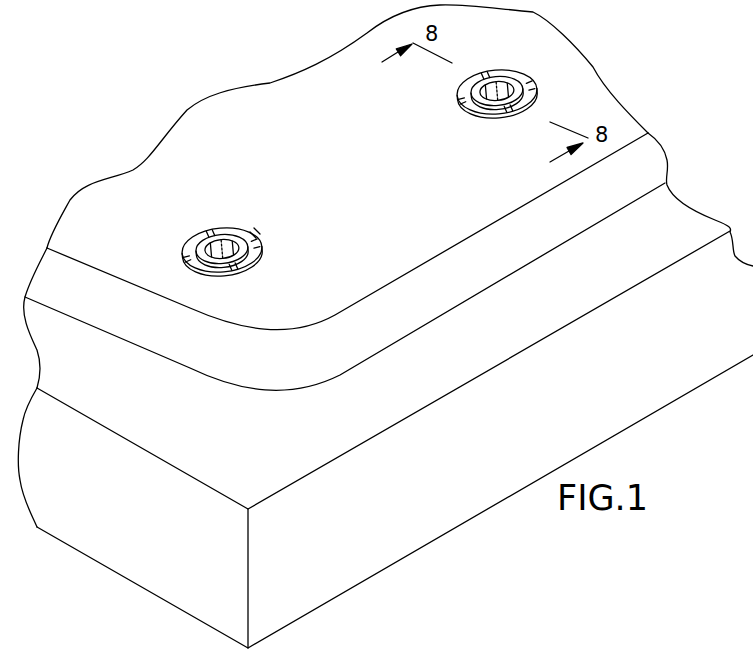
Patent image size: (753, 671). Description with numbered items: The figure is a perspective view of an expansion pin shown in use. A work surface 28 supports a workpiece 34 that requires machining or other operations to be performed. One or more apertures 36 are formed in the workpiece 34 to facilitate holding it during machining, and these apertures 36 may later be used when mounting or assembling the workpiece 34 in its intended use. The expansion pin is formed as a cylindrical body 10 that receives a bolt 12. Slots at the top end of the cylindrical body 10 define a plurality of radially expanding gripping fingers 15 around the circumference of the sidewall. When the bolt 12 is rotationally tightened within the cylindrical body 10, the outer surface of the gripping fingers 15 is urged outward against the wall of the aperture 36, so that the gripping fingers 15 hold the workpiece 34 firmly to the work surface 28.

The cylindrical body 10 is at (339, 166).
The bolt 12 is at (238, 262).
The gripping fingers 15 is at (253, 237).
The work surface 28 is at (352, 573).
The workpiece 34 is at (385, 333).
The aperture 36 is at (184, 260).